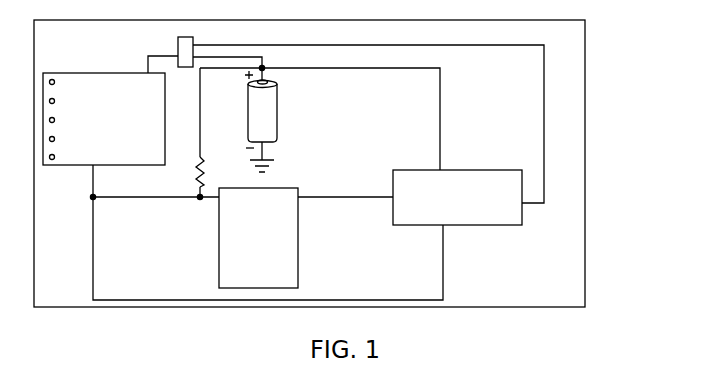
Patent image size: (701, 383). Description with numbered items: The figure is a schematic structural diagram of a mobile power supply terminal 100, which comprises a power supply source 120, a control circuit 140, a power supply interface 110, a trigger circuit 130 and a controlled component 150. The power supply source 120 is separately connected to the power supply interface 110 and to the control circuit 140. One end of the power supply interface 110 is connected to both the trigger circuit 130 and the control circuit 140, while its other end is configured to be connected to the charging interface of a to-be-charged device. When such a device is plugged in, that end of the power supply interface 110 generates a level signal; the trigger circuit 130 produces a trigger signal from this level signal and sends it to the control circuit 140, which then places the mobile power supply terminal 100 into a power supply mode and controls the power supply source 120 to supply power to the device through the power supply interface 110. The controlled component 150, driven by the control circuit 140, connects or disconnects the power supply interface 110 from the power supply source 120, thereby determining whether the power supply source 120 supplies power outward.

The mobile power supply terminal 100 is at (585, 172).
The power supply interface 110 is at (57, 73).
The power supply source 120 is at (277, 120).
The trigger circuit 130 is at (298, 188).
The control circuit 140 is at (460, 170).
The controlled component 150 is at (178, 52).